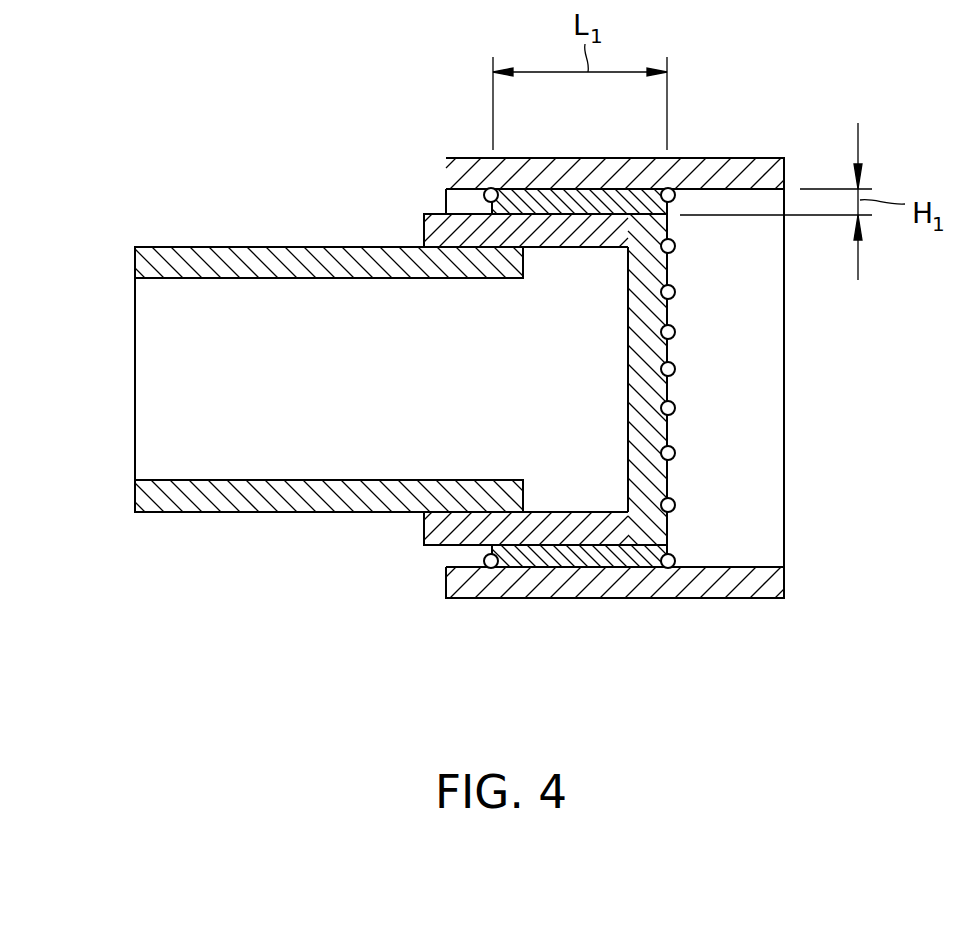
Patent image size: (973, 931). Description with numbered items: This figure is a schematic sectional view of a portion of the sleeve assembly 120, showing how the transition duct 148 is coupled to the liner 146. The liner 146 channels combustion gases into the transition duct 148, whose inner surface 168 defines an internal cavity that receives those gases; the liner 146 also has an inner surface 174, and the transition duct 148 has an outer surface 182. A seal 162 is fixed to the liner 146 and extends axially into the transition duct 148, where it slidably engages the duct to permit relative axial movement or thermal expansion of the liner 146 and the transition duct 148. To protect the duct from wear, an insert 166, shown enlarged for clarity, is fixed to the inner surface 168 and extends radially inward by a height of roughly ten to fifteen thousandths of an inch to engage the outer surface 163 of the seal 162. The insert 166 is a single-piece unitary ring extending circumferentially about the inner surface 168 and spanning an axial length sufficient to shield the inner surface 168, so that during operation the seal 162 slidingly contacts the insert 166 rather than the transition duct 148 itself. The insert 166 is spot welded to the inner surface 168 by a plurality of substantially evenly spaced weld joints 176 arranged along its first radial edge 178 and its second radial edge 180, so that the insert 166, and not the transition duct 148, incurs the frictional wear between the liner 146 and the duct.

The sleeve assembly 120 is at (806, 105).
The liner 146 is at (238, 488).
The transition duct 148 is at (735, 175).
The seal 162 is at (553, 525).
The outer surface 163 is at (537, 212).
The insert 166 is at (627, 558).
The inner surface 168 is at (730, 567).
The inner surface 174 is at (300, 482).
The weld joints 176 is at (676, 371).
The first radial edge 178 is at (492, 552).
The second radial edge 180 is at (667, 545).
The outer surface 182 is at (577, 158).